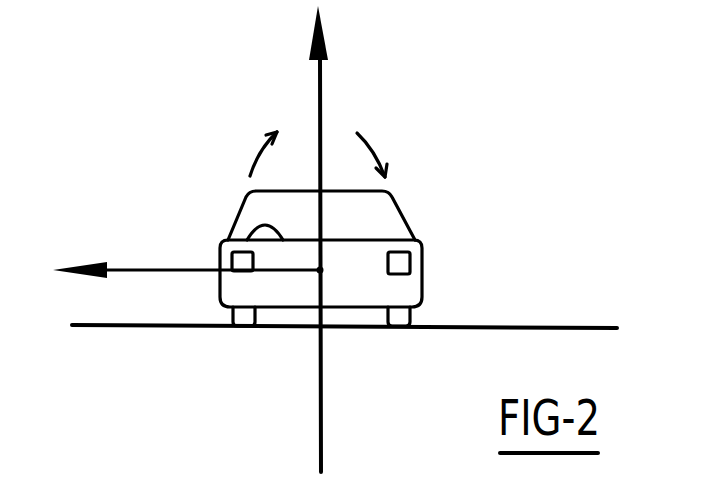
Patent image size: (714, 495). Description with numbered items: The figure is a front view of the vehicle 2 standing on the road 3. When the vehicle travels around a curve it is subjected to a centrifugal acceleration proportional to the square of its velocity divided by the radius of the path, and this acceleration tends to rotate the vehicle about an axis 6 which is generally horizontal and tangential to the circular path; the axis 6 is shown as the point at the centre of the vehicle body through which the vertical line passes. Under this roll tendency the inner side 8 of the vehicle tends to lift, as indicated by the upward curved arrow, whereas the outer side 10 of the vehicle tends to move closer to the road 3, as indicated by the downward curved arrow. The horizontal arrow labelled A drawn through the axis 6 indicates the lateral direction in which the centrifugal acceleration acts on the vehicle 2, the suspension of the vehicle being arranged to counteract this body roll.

The vehicle 2 is at (336, 226).
The road 3 is at (542, 328).
The axis 6 is at (320, 270).
The inner side 8 is at (240, 205).
The outer side 10 is at (407, 215).
The direction of lateral movement A is at (186, 243).